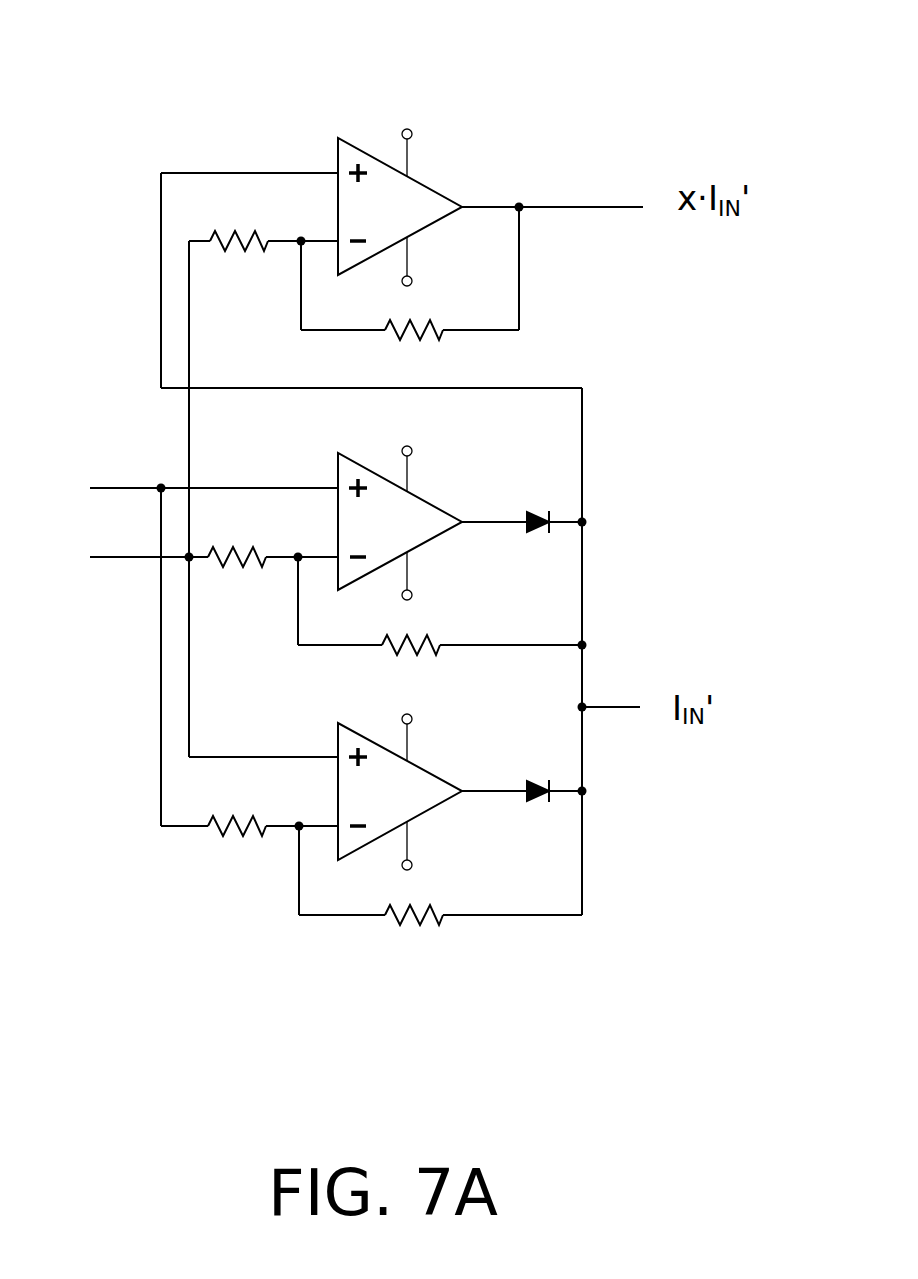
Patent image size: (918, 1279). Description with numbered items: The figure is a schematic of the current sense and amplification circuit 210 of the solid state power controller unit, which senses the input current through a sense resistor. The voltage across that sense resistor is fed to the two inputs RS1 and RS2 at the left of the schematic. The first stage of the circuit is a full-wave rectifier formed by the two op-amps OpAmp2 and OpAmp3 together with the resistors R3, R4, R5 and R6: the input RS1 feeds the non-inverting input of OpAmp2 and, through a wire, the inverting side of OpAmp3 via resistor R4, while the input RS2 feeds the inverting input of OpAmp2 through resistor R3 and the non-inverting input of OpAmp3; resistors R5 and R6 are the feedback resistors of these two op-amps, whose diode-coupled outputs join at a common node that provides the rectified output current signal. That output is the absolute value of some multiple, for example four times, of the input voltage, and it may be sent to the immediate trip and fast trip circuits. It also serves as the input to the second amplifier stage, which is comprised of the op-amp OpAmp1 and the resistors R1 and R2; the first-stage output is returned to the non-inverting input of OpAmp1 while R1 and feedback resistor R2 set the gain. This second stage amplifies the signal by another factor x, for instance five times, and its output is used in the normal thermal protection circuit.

The current sense and amplification circuit 210 is at (83, 25).
The op-amp OpAmp1' OpAmp1 is at (368, 202).
The op-amp Op-Amp2' OpAmp2 is at (368, 519).
The op-amp Op-Amp3' OpAmp3 is at (368, 789).
The resistor R1' R1 is at (239, 258).
The resistor R2' R2 is at (414, 347).
The resistor R3' R3 is at (237, 578).
The resistor R4' R4 is at (237, 844).
The resistor R5' R5 is at (411, 663).
The resistor R6' R6 is at (414, 933).
The input RS1 is at (184, 488).
The input RS2 is at (119, 557).